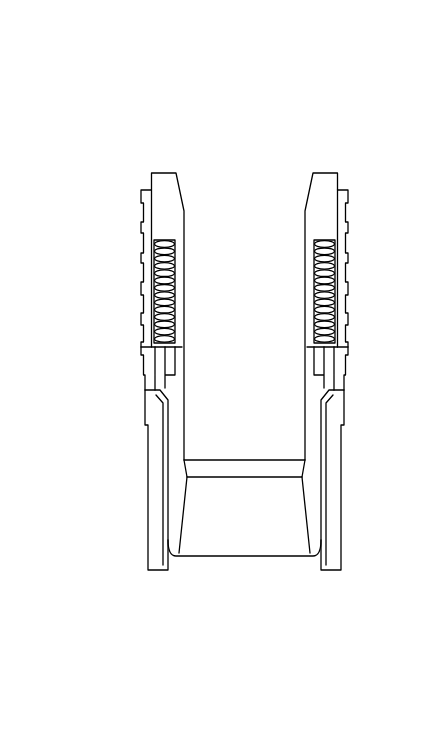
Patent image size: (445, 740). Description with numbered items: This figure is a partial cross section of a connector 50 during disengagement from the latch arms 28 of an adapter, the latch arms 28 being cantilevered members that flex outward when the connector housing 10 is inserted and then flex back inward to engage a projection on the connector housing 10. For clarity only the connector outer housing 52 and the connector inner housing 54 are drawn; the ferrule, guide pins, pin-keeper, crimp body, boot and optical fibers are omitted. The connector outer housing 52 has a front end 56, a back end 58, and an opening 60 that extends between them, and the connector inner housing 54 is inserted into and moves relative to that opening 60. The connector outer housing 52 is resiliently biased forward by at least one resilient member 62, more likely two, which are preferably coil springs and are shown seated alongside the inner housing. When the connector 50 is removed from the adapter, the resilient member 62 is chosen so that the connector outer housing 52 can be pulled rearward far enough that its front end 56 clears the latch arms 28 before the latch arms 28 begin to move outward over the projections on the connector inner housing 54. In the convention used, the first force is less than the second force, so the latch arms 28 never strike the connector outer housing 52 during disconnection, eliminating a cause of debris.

The connector housing 10 is at (97, 102).
The connector 50 is at (378, 135).
The connector outer housing 52 is at (348, 310).
The connector inner housing 54 is at (272, 557).
The front end 56 is at (338, 395).
The back end 58 is at (342, 190).
The opening 60 is at (150, 189).
The resilient member 62 is at (152, 262).
The latch arms 28 is at (150, 457).